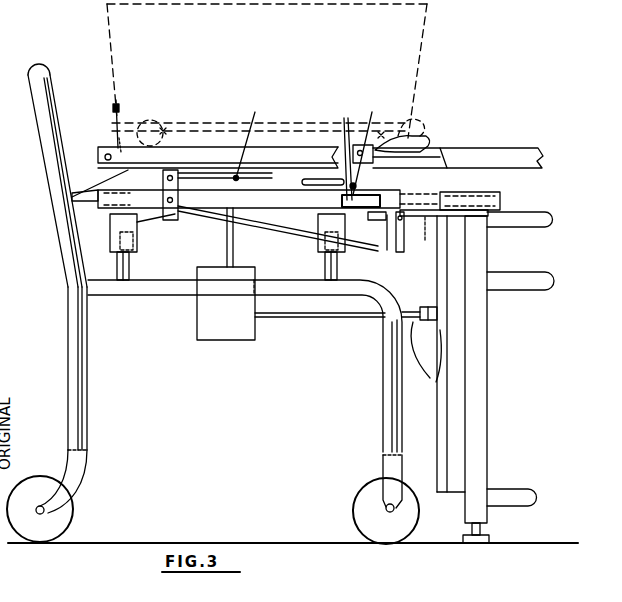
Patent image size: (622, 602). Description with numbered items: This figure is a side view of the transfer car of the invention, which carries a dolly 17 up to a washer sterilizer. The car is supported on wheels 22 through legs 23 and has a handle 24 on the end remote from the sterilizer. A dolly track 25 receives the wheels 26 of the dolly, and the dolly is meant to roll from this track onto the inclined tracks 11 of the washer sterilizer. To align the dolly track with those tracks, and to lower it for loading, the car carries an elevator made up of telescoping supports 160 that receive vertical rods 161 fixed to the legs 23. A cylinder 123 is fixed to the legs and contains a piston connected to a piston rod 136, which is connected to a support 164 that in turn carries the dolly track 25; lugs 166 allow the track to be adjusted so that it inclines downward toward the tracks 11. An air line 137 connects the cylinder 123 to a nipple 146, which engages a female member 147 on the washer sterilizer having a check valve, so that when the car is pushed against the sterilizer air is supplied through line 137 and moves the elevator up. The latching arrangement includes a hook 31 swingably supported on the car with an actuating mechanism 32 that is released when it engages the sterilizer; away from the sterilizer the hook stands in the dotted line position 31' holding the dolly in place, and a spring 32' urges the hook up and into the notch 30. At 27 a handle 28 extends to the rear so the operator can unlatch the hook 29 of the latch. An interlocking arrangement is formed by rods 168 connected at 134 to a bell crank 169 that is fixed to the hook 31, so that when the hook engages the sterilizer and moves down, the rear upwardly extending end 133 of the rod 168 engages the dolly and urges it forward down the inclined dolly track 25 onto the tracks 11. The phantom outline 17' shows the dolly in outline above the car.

The inclined tracks 11 is at (510, 155).
The dolly 17 is at (218, 134).
The hopper (phantom) 17' is at (267, 71).
The wheels 22 is at (68, 513).
The legs 23 is at (83, 410).
The handle 24 is at (50, 103).
The dolly track 25 is at (231, 230).
The wheels of the dolly 26 is at (166, 131).
The transfer car location 27 is at (402, 252).
The handle 28 is at (378, 250).
The hook 29 is at (447, 207).
The notch 30 is at (485, 197).
The hook 31 is at (421, 134).
The dotted line position of hook 31' is at (429, 112).
The actuating mechanism 32 is at (255, 172).
The spring 32' is at (329, 190).
The cylinder 123 is at (226, 342).
The rear upwardly extending end 133 is at (114, 122).
The connection 134 is at (347, 118).
The piston rod 136 is at (222, 233).
The air line 137 is at (313, 316).
The nipple 146 is at (432, 322).
The female member 147 is at (433, 372).
The telescoping supports 160 is at (136, 231).
The vertical rods 161 is at (131, 266).
The support 164 is at (316, 240).
The lugs 166 is at (184, 185).
The rods 168 is at (228, 134).
The bell crank 169 is at (374, 141).